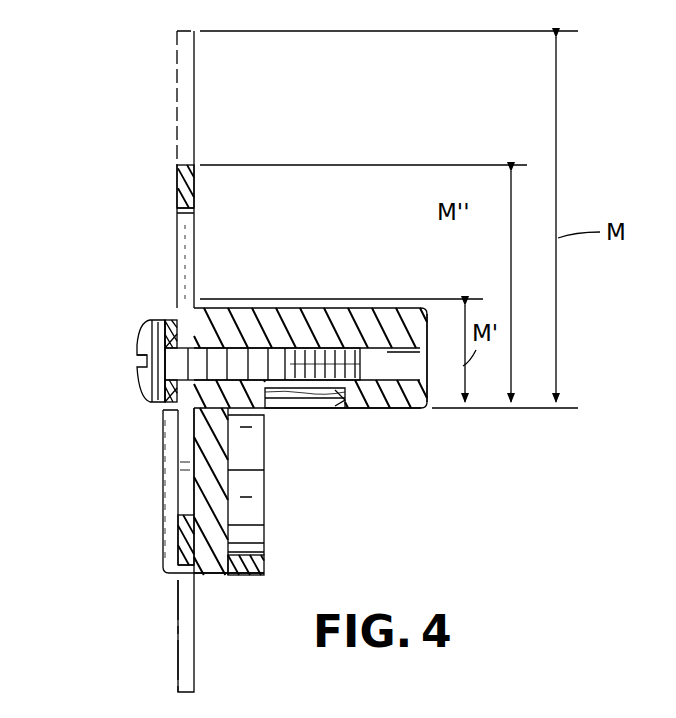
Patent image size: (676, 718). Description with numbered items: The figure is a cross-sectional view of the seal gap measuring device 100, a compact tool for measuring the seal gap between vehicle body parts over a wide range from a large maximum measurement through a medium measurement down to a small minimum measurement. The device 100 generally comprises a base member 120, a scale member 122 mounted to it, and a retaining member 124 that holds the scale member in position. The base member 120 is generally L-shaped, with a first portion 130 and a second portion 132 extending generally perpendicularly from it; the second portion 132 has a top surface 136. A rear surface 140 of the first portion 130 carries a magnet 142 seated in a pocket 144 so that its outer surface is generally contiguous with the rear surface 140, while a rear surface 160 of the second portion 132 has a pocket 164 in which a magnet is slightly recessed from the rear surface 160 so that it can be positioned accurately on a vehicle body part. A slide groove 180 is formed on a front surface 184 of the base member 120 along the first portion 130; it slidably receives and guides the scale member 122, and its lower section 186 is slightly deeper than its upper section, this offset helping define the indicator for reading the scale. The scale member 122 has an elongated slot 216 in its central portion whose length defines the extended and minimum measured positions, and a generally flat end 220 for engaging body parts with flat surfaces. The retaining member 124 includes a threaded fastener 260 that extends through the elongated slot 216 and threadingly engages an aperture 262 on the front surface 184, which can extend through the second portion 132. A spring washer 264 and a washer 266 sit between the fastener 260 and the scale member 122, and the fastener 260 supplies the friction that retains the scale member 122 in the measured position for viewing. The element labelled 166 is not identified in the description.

The seal gap measuring device 100 is at (100, 240).
The base member 120 is at (238, 582).
The scale member 122 is at (177, 168).
The retaining member 124 is at (140, 395).
The first portion 130 is at (238, 466).
The second portion 132 is at (330, 320).
The top surface 136 is at (405, 308).
The rear surface 140 is at (265, 563).
The magnet 142 is at (250, 508).
The pocket 144 is at (250, 550).
The rear surface 160 is at (400, 410).
The pocket 164 is at (337, 400).
The nut plate 166 is at (292, 400).
The slide groove 180 is at (166, 548).
The front surface 184 is at (176, 472).
The lower section 186 is at (166, 500).
The elongated slot 216 is at (200, 252).
The flat end 220 is at (190, 165).
The threaded fastener 260 is at (140, 345).
The aperture 262 is at (380, 362).
The spring washer 264 is at (163, 322).
The washer 266 is at (172, 325).